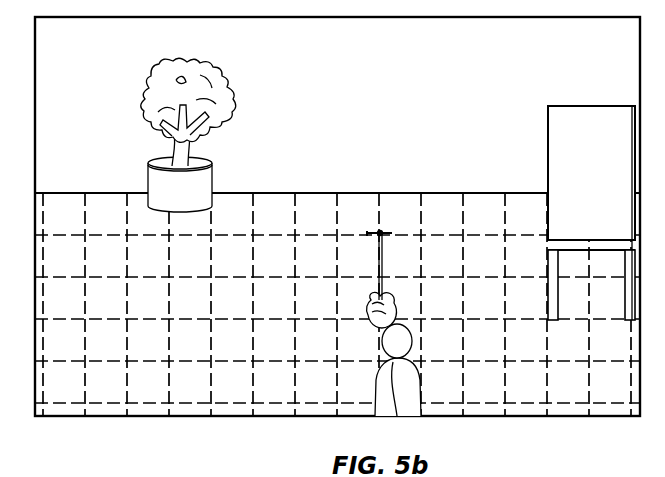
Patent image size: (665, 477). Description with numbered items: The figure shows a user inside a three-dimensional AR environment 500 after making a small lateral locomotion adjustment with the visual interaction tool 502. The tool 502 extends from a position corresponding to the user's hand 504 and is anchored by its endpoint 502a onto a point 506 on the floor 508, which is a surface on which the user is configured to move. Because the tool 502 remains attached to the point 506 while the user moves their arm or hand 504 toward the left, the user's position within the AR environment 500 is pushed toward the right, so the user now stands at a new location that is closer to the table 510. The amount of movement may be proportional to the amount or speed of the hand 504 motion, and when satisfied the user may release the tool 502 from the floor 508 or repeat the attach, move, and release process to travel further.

The three-dimensional AR environment 500 is at (118, 391).
The visual interaction tool 502 is at (381, 270).
The endpoint 502a is at (380, 233).
The user's hand 504 is at (403, 318).
The point 506 is at (368, 232).
The floor 508 is at (275, 223).
The table 510 is at (570, 162).